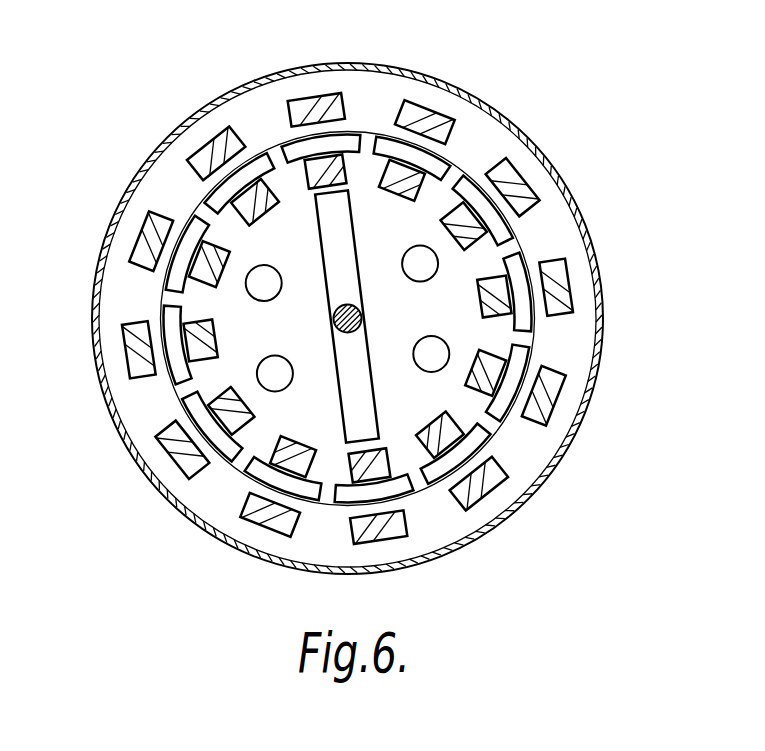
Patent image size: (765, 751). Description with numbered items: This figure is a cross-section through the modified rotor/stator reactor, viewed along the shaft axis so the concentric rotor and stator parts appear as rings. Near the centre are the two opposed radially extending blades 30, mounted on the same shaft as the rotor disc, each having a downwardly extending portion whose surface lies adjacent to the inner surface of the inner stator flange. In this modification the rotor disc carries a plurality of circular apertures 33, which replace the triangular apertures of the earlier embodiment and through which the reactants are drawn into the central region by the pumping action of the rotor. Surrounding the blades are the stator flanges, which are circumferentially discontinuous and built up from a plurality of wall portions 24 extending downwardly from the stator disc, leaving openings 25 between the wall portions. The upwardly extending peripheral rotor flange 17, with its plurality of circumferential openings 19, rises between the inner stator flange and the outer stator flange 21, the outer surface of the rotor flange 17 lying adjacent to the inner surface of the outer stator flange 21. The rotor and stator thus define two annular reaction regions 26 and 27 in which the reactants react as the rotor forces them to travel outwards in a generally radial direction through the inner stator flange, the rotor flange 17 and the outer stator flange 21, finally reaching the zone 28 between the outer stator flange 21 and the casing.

The rotor flange 17 is at (523, 298).
The circumferential openings 19 is at (523, 347).
The outer stator flange 21 is at (547, 404).
The wall portions 24 is at (218, 145).
The openings 25 is at (177, 185).
The annular reaction region 26 is at (348, 123).
The annular reaction region 27 is at (447, 160).
The zone 28 is at (117, 351).
The radially extending blades 30 is at (332, 217).
The circular apertures 33 is at (440, 266).